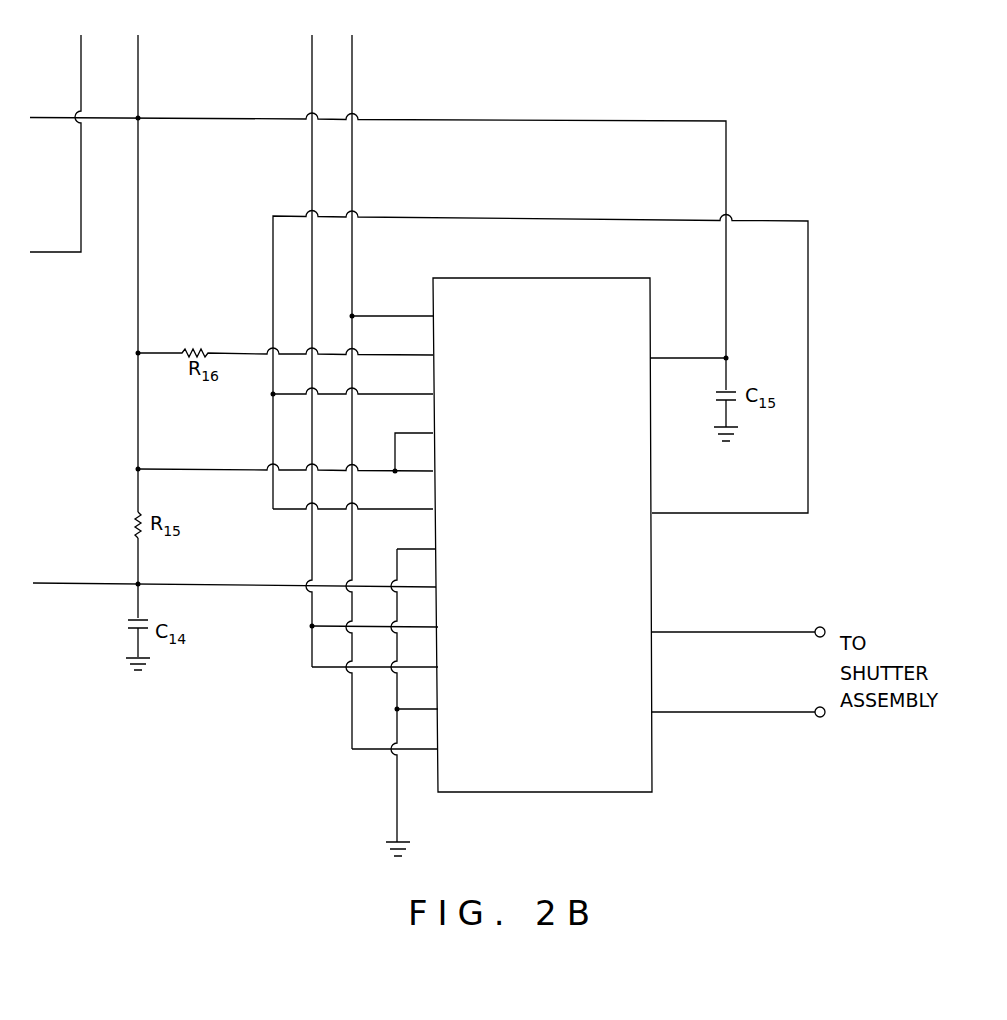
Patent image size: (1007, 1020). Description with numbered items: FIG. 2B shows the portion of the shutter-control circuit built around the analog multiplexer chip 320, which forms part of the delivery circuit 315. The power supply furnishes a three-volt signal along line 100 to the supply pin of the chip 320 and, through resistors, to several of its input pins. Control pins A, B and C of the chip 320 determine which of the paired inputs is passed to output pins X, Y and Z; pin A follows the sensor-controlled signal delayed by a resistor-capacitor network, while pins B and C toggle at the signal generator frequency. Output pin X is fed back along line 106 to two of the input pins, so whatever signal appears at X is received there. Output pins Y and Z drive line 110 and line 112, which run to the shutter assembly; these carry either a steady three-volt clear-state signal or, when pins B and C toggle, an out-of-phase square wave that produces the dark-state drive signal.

The line 100 is at (478, 118).
The line 106 is at (482, 219).
The line 110 is at (697, 632).
The line 112 is at (725, 712).
The delivery circuit 315 is at (335, 790).
The 4053 chip 320 is at (625, 778).